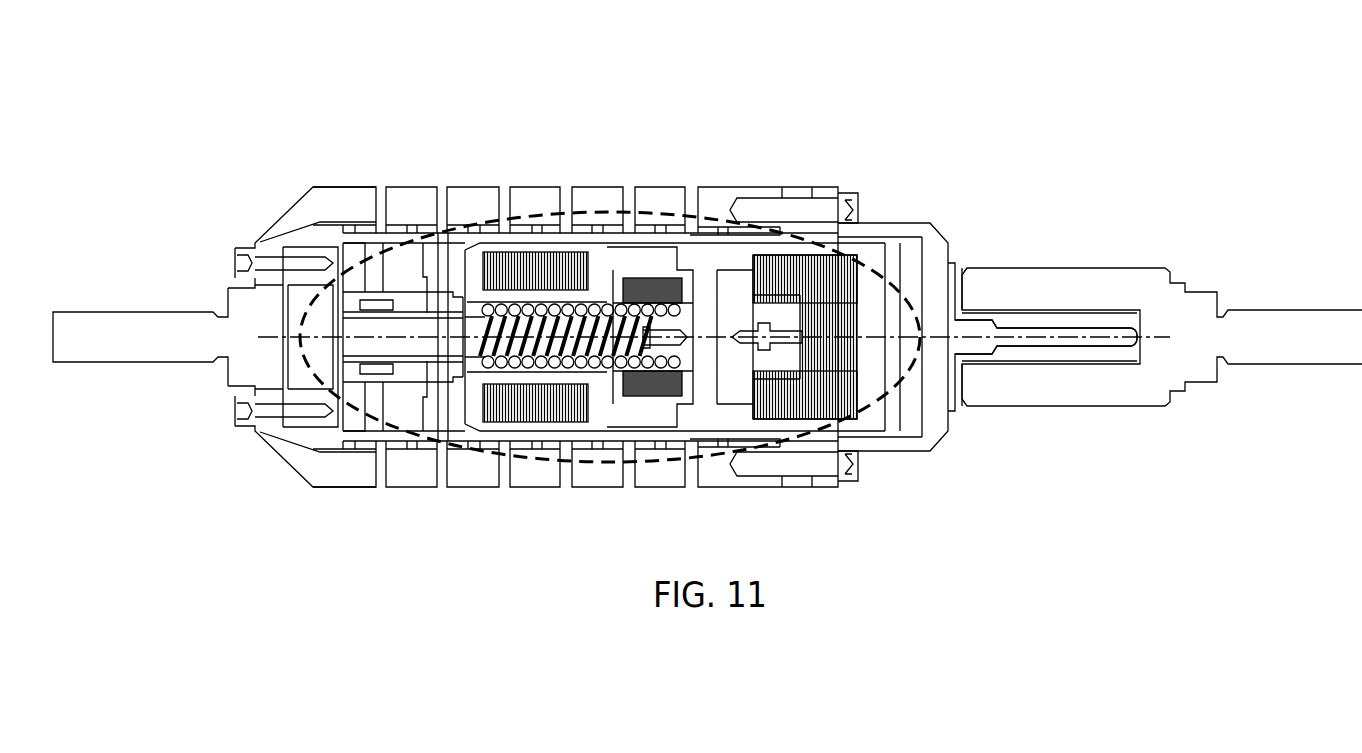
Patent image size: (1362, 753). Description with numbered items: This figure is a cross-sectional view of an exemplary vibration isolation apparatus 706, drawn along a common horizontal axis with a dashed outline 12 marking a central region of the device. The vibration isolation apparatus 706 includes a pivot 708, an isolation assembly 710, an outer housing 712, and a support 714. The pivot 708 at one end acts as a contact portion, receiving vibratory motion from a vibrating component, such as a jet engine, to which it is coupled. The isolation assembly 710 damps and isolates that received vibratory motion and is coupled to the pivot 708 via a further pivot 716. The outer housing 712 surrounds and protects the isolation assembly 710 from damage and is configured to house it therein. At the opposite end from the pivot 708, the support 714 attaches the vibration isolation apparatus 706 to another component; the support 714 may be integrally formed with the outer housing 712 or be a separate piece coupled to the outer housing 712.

The vibration isolation apparatus 706 is at (707, 97).
The pivot 708 is at (1097, 398).
The isolation assembly 710 is at (710, 452).
The outer housing 712 is at (342, 200).
The support 714 is at (133, 325).
The pivot 716 is at (978, 352).
The actuator portion 12 is at (603, 465).